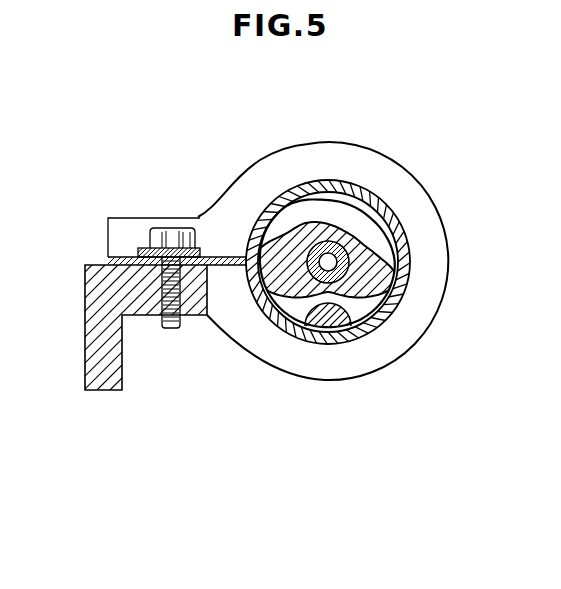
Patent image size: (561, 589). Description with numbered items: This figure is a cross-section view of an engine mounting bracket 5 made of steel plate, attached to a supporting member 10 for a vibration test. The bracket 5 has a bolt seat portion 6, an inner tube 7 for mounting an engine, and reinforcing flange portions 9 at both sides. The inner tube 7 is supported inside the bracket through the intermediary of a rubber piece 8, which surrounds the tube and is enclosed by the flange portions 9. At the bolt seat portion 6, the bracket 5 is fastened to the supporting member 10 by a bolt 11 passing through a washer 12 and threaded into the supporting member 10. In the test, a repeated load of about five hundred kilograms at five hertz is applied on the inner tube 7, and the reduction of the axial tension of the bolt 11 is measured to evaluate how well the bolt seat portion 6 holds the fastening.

The bracket 5 is at (403, 290).
The bolt seat portion 6 is at (108, 258).
The inner tube 7 is at (350, 253).
The rubber piece 8 is at (392, 266).
The reinforcing flange portions 9 is at (370, 149).
The supporting member 10 is at (85, 327).
The bolt 11 is at (170, 229).
The washer 12 is at (143, 248).